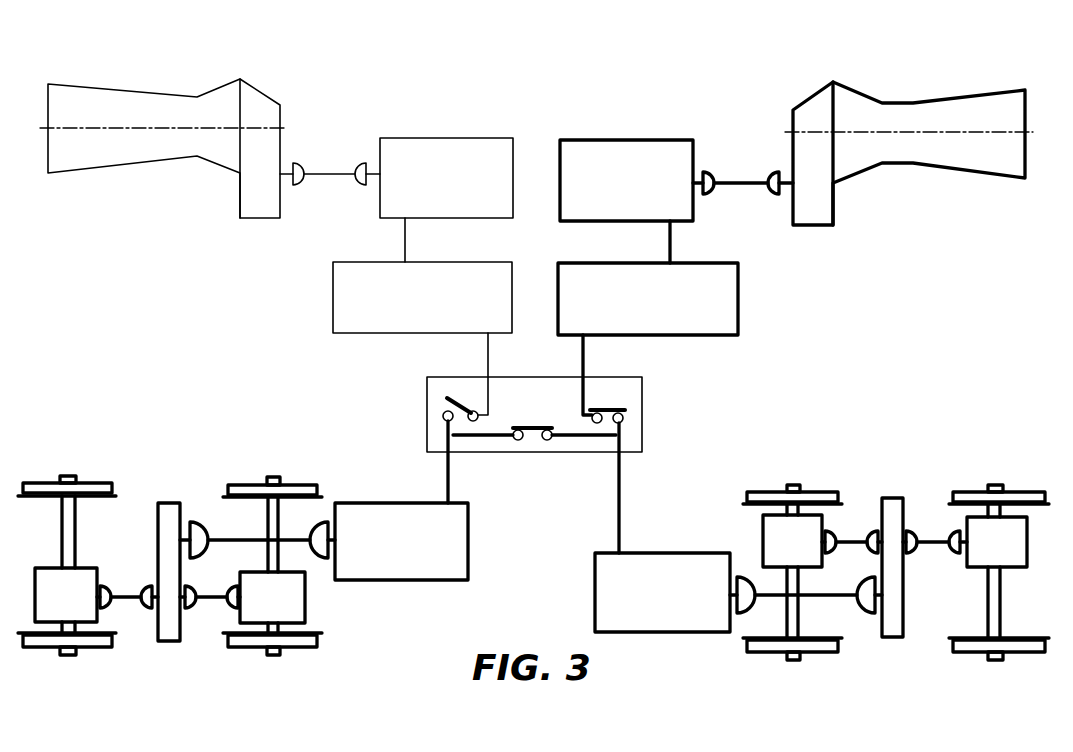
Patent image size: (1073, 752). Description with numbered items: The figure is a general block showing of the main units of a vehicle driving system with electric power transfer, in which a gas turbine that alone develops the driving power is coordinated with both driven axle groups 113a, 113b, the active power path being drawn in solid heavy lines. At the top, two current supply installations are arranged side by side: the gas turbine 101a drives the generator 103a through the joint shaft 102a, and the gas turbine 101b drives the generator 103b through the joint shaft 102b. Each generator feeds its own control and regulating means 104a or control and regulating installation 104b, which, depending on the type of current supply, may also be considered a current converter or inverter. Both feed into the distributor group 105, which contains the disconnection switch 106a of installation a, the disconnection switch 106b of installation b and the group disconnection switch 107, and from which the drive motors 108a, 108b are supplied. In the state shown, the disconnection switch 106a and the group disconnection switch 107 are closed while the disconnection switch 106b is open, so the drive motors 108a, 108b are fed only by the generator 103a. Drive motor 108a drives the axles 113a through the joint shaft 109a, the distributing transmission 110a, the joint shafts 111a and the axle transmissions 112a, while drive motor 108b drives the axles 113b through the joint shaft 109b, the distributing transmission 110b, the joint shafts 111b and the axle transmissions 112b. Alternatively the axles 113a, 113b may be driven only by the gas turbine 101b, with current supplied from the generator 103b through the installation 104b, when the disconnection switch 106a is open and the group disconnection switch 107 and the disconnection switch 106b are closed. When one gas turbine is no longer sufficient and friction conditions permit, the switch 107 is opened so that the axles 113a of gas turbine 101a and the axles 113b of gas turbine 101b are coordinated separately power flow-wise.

The gas turbine 101a is at (917, 117).
The gas turbine 101b is at (151, 105).
The joint shaft 102a is at (749, 180).
The joint shaft 102b is at (325, 172).
The generator 103a is at (622, 155).
The generator 103b is at (442, 148).
The control and regulating means 104a is at (722, 285).
The control and regulating installation 104b is at (352, 286).
The distributor group 105 is at (523, 390).
The disconnection switch 106a is at (612, 407).
The disconnection switch 106b is at (457, 395).
The group disconnection switch 107 is at (532, 441).
The drive motor 108a is at (647, 568).
The drive motor 108b is at (408, 513).
The joint shaft 109a is at (757, 578).
The joint shaft 109b is at (240, 537).
The distributing transmission 110a is at (893, 505).
The distributing transmission 110b is at (175, 512).
The joint shaft 111a is at (850, 538).
The joint shaft 111b is at (133, 593).
The axle transmission 112a is at (777, 542).
The axle transmission 112b is at (77, 583).
The driven axles 113a is at (795, 485).
The driven axles 113b is at (65, 477).